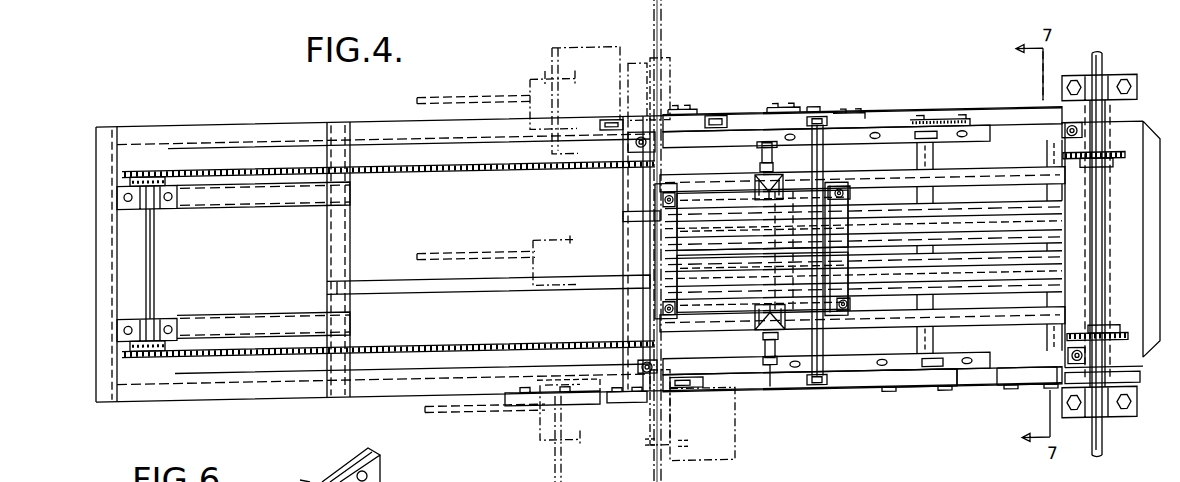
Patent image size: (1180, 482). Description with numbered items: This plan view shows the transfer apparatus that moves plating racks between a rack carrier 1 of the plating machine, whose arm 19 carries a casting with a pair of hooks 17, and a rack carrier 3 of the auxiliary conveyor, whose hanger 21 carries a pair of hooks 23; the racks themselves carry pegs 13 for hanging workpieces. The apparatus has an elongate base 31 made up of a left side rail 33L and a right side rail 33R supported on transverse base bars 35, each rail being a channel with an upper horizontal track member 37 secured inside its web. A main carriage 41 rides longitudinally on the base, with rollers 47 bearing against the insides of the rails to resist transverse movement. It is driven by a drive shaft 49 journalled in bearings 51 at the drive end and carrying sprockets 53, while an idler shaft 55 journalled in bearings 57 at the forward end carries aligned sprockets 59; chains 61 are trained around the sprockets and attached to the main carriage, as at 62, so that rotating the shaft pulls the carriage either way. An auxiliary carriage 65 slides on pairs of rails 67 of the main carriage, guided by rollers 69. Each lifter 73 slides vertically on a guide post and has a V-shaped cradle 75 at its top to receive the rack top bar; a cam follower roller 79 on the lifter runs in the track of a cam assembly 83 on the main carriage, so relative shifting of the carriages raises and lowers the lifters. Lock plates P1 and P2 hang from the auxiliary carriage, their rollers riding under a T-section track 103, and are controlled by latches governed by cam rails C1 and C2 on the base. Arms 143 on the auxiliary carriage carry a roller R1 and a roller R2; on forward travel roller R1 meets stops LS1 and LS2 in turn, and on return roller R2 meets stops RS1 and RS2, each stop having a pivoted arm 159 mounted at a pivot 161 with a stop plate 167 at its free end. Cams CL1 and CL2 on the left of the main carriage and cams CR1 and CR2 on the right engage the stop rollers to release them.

In FIG. 4, the rack carrier 1 is at (522, 84).
In FIG. 4, the rack carrier 3 is at (645, 69).
In FIG. 4, the pegs 13 is at (688, 456).
In FIG. 4, the hooks 17 is at (570, 88).
In FIG. 4, the arm 19 is at (505, 104).
In FIG. 4, the hanger 21 is at (670, 72).
In FIG. 4, the hooks 23 is at (634, 92).
In FIG. 4, the base 31 is at (375, 127).
In FIG. 4, the right side rail 33R is at (240, 127).
In FIG. 4, the left side rail 33L is at (242, 396).
In FIG. 4, the transverse base bars 35 is at (327, 252).
In FIG. 4, the upper horizontal track member 37 is at (313, 150).
In FIG. 4, the main carriage 41 is at (1010, 140).
In FIG. 4, the rollers 47 is at (655, 154).
In FIG. 4, the drive shaft 49 is at (1102, 84).
In FIG. 4, the bearings 51 is at (1125, 97).
In FIG. 4, the sprockets 53 is at (1110, 172).
In FIG. 4, the idler shaft 55 is at (155, 255).
In FIG. 4, the bearings 57 is at (165, 212).
In FIG. 4, the sprockets 59 is at (143, 178).
In FIG. 4, the chains 61 is at (424, 178).
In FIG. 4, the chain attachment 62 is at (1080, 187).
In FIG. 4, the auxiliary carriage 65 is at (694, 188).
In FIG. 4, the rails 67 is at (946, 220).
In FIG. 4, the rollers 69 is at (655, 214).
In FIG. 4, the lifter 73 is at (759, 173).
In FIG. 4, the V-shaped cradle 75 is at (755, 195).
In FIG. 4, the cam follower roller 79 is at (765, 150).
In FIG. 4, the cam assembly 83 is at (972, 165).
In FIG. 4, the T-section track 103 is at (978, 263).
In FIG. 4, the arms 143 is at (824, 168).
In FIG. 4, the stop plate 167 is at (692, 399).
In FIG. 4, the cam rail C1 is at (468, 299).
In FIG. 4, the cam rail C2 is at (623, 228).
In FIG. 4, the lock plate P1 is at (724, 283).
In FIG. 4, the lock plate P2 is at (716, 250).
In FIG. 4, the roller R1 is at (818, 400).
In FIG. 4, the roller R2 is at (818, 130).
In FIG. 4, the stop RS1 is at (612, 123).
In FIG. 4, the stop RS2 is at (733, 122).
In FIG. 4, the stop LS1 is at (639, 417).
In FIG. 4, the stop LS2 is at (559, 417).
In FIG. 4, the cam CR1 is at (946, 134).
In FIG. 4, the cam CR2 is at (852, 126).
In FIG. 4, the cam CL1 is at (912, 404).
In FIG. 4, the cam CL2 is at (1012, 404).
In FIG. 6, the arm 159 is at (294, 473).
In FIG. 6, the pivot 161 is at (370, 472).